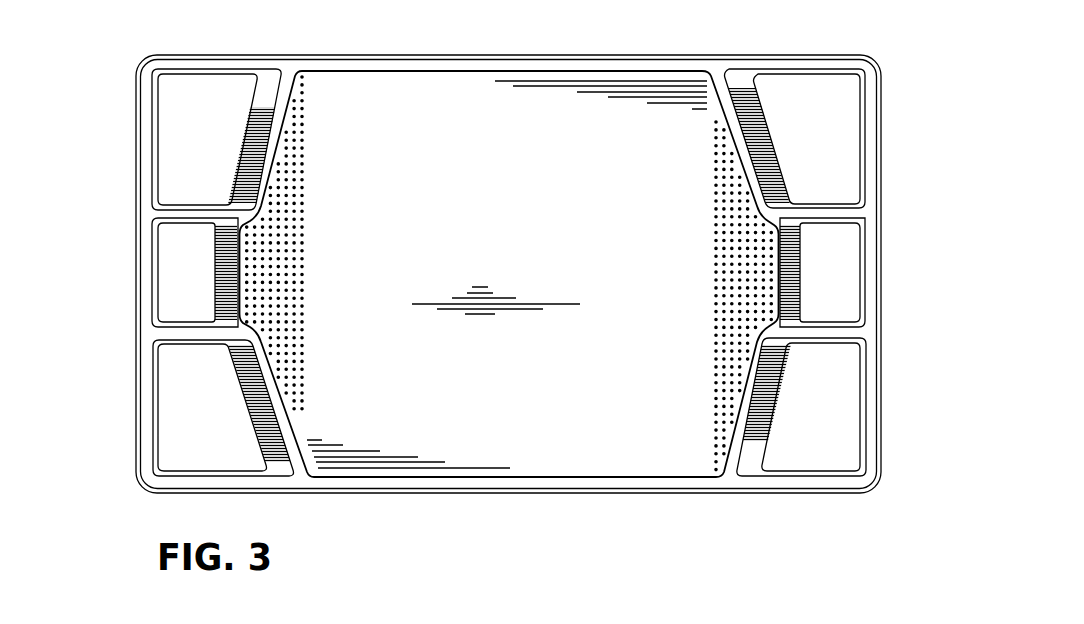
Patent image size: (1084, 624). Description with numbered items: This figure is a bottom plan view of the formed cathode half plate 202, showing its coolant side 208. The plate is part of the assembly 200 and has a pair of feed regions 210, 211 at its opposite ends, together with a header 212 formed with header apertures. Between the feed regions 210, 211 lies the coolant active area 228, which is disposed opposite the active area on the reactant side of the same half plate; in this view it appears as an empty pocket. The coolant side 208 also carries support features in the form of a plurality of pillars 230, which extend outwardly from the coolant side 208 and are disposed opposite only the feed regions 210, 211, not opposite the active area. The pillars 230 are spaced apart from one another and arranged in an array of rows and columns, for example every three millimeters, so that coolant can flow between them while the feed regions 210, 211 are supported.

The tray 200 is at (501, 258).
The formed cathode half plate 202 is at (548, 258).
The coolant side 208 is at (371, 90).
The feed region 210 is at (788, 246).
The feed region 211 is at (236, 265).
The header 212 is at (889, 334).
The coolant active area 228 is at (595, 227).
The pillars 230 is at (715, 393).